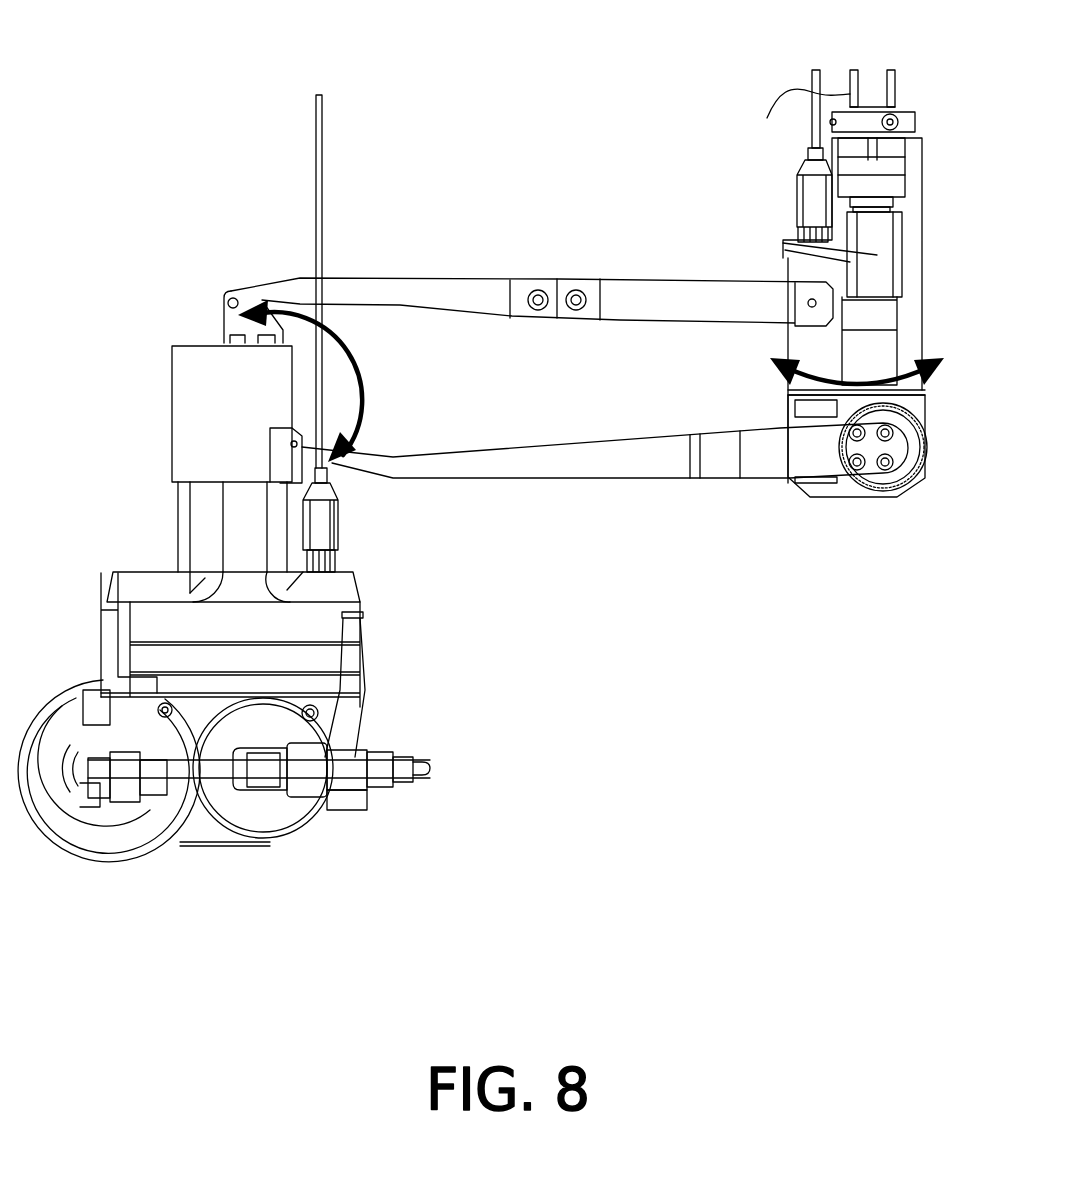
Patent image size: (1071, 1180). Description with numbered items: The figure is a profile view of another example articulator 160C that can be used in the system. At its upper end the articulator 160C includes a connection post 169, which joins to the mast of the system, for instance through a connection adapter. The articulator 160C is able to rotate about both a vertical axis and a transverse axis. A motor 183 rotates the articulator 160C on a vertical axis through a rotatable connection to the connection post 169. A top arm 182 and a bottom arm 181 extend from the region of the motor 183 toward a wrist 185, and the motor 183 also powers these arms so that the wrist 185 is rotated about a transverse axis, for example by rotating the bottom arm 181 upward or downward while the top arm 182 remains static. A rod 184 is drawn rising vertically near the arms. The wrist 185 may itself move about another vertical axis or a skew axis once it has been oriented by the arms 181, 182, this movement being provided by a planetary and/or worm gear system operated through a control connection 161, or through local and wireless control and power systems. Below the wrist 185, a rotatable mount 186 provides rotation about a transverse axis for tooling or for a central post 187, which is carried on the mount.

The articulator 160C is at (135, 177).
The control connection 161 is at (814, 68).
The connection post 169 is at (779, 112).
The bottom arm 181 is at (660, 455).
The top arm 182 is at (600, 295).
The motor 183 is at (780, 340).
The rod 184 is at (324, 200).
The wrist 185 is at (173, 572).
The rotatable mount 186 is at (300, 807).
The central post 187 is at (112, 832).